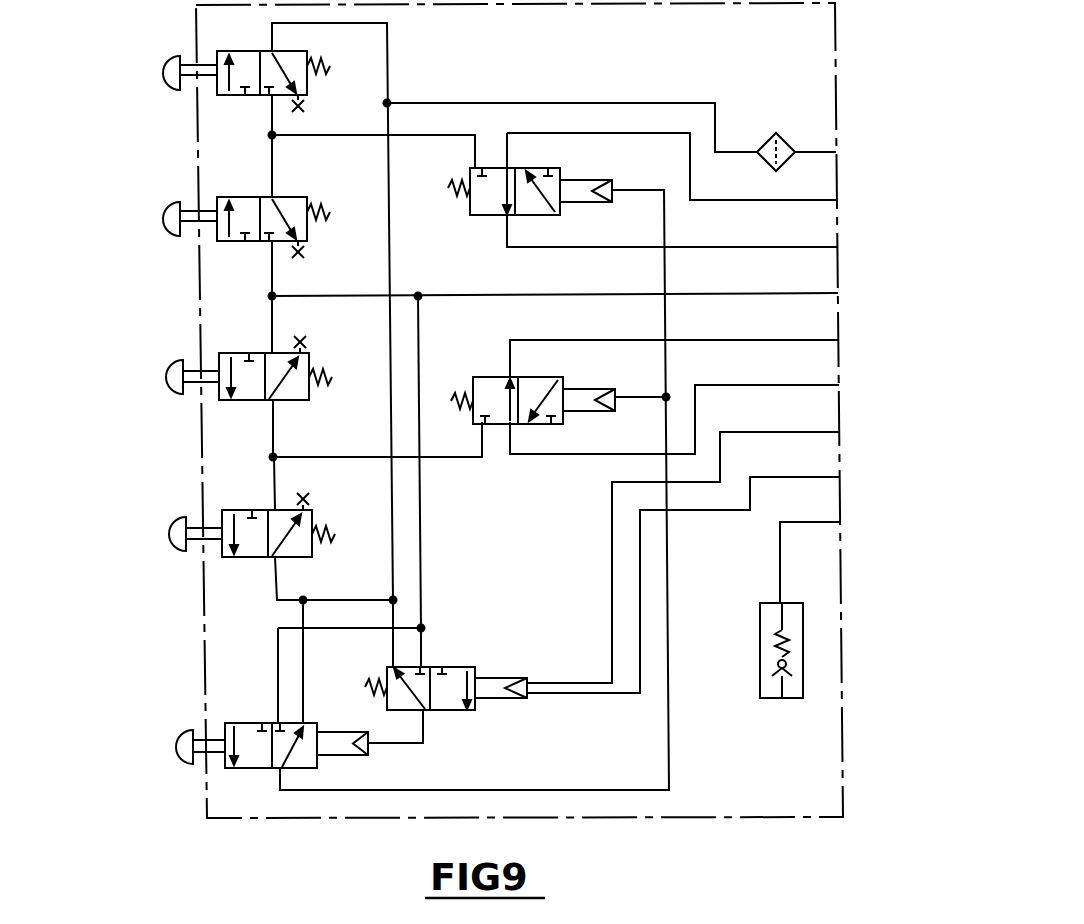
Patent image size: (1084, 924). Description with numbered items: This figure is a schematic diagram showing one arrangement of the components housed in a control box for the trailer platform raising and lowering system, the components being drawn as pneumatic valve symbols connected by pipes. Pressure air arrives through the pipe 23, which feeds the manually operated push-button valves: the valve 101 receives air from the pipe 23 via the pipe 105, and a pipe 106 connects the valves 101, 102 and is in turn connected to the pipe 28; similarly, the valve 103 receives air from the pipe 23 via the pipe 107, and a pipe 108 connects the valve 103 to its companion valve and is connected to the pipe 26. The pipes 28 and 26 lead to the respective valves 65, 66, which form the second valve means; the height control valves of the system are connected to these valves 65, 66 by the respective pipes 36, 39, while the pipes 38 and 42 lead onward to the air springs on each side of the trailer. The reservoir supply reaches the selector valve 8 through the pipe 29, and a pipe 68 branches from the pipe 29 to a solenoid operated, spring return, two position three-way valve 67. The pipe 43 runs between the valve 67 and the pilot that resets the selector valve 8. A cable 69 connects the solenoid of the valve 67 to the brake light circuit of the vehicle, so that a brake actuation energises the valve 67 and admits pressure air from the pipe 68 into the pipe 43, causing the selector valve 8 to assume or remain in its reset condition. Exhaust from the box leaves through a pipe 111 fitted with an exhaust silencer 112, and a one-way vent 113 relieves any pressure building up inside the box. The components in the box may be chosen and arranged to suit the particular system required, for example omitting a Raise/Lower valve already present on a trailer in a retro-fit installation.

The selector valve 8 is at (170, 760).
The pipe 23 is at (725, 292).
The pipe 26 is at (370, 458).
The pipe 28 is at (425, 134).
The pipe 29 is at (420, 560).
The pipe 36 is at (750, 200).
The pipes 38 is at (725, 244).
The pipe 39 is at (735, 383).
The pipes 42 is at (730, 338).
The pipe 43 is at (395, 745).
The valve 65 is at (590, 180).
The valve 66 is at (580, 385).
The solenoid operated, spring return, two position 3-way valve 67 is at (497, 700).
The pipe 68 is at (423, 648).
The cable 69 is at (840, 432).
The valve 101 is at (167, 232).
The valve 102 is at (168, 90).
The valve 103 is at (170, 392).
The pipe 105 is at (273, 275).
The pipe 106 is at (272, 178).
The pipe 107 is at (273, 330).
The pipe 108 is at (273, 440).
The pipe 111 is at (490, 103).
The exhaust silencer 112 is at (787, 140).
The one-way vent 113 is at (760, 653).